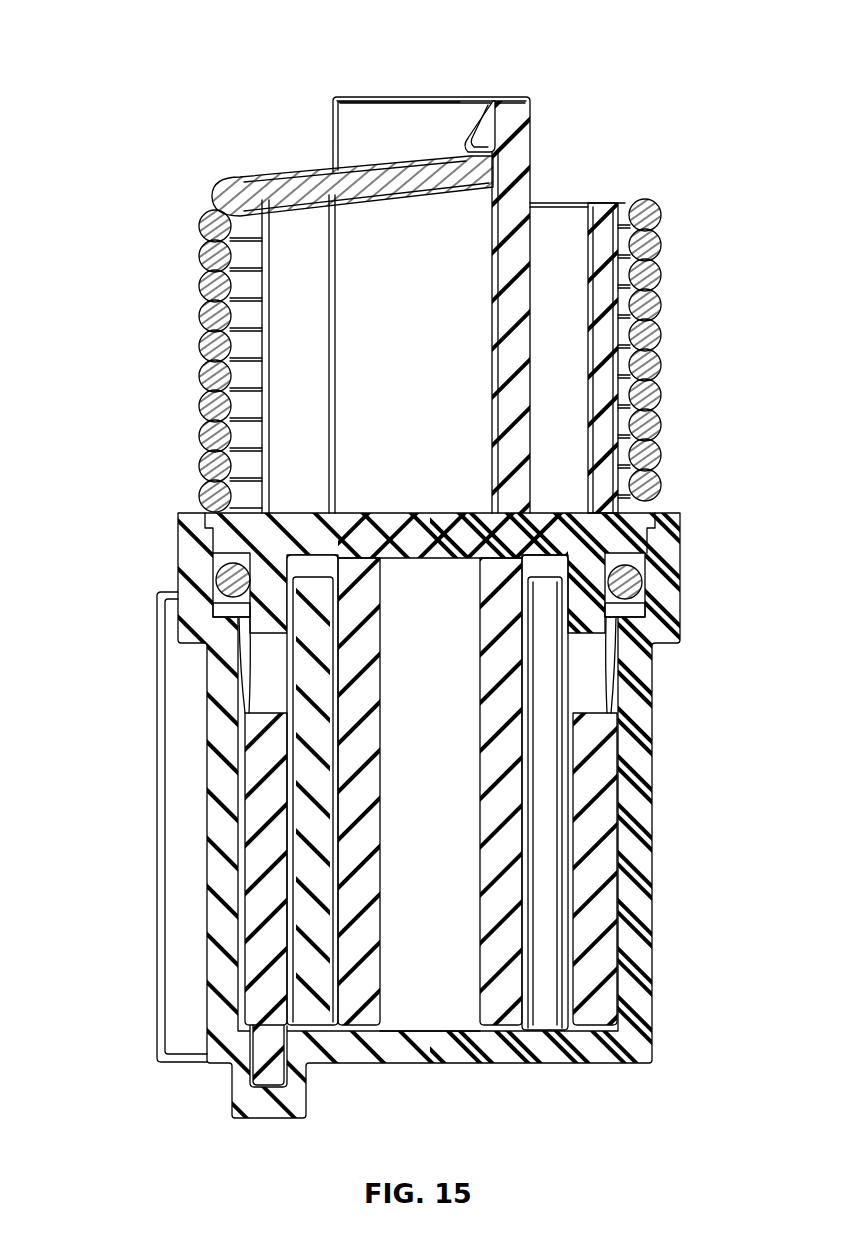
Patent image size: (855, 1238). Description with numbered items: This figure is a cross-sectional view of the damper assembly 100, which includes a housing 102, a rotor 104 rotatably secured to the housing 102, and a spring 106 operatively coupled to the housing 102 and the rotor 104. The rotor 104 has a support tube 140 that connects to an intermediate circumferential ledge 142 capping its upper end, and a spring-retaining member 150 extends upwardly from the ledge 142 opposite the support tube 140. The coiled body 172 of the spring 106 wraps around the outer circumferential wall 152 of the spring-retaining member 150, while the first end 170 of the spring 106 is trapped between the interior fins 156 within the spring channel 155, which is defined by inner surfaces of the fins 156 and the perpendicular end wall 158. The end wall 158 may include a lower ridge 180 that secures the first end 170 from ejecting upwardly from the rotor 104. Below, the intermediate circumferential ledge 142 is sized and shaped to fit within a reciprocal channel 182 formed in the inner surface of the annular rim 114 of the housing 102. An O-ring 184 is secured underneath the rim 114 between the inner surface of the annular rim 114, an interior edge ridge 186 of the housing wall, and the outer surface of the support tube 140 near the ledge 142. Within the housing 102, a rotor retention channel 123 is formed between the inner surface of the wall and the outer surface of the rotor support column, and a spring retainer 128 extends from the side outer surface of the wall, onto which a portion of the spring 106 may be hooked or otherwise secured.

The damper assembly 100 is at (146, 127).
The housing 102 is at (672, 686).
The rotor 104 is at (540, 148).
The spring 106 is at (676, 246).
The annular rim 114 is at (683, 563).
The rotor retention channel 123 is at (590, 1038).
The spring retainer 128 is at (172, 903).
The support tube 140 is at (600, 875).
The intermediate circumferential ledge 142 is at (632, 528).
The spring-retaining member 150 is at (627, 205).
The outer circumferential wall 152 is at (602, 227).
The spring channel 155 is at (358, 152).
The interior fins 156 is at (397, 97).
The end wall 158 is at (533, 112).
The first end 170 is at (318, 185).
The coiled body 172 is at (660, 300).
The lower ridge 180 is at (484, 150).
The reciprocal channel 182 is at (212, 537).
The O-ring 184 is at (632, 580).
The interior edge ridge 186 is at (232, 613).